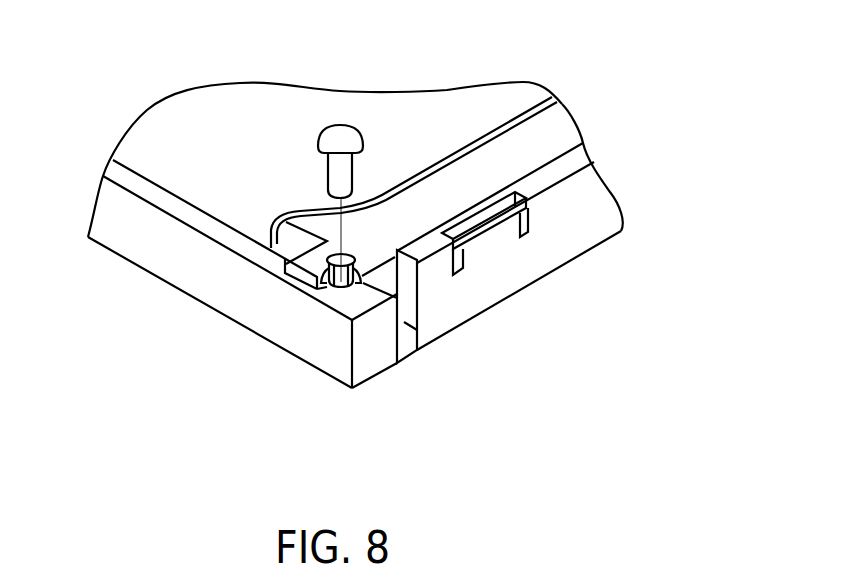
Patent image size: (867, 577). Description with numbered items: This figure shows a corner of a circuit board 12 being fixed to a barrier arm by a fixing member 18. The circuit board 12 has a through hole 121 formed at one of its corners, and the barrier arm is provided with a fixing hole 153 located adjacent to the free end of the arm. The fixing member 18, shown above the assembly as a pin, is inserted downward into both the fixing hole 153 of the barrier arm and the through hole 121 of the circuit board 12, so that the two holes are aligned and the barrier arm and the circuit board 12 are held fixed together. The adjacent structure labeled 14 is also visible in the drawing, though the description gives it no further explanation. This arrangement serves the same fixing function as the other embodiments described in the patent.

The circuit board 12 is at (565, 128).
The side frame portion 14 is at (590, 262).
The fixing member 18 is at (343, 140).
The through hole 121 is at (335, 272).
The fixing hole 153 is at (338, 290).